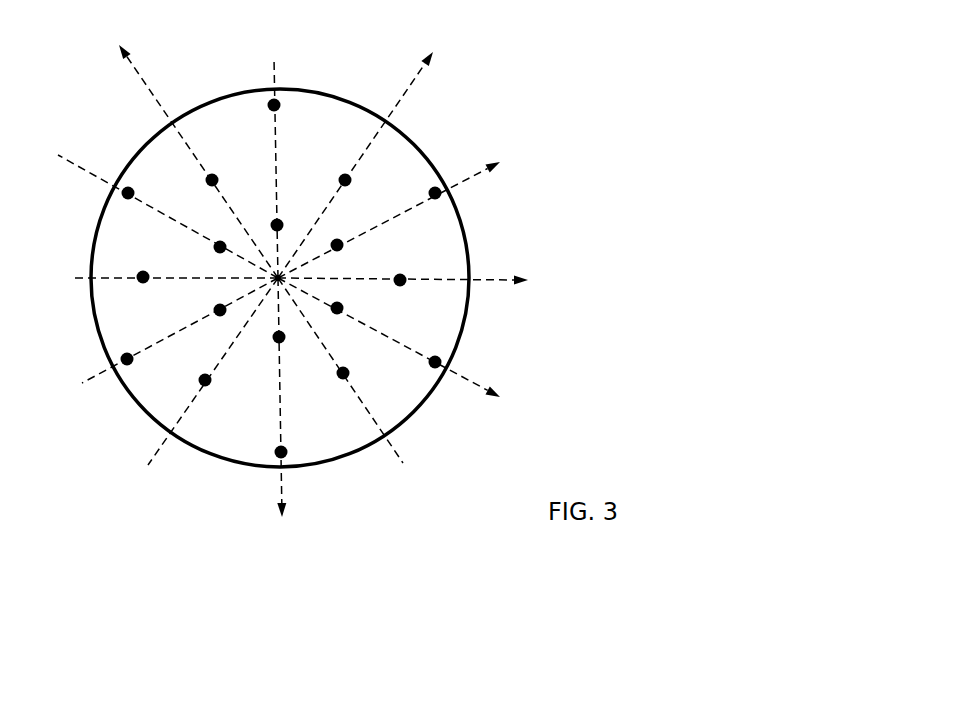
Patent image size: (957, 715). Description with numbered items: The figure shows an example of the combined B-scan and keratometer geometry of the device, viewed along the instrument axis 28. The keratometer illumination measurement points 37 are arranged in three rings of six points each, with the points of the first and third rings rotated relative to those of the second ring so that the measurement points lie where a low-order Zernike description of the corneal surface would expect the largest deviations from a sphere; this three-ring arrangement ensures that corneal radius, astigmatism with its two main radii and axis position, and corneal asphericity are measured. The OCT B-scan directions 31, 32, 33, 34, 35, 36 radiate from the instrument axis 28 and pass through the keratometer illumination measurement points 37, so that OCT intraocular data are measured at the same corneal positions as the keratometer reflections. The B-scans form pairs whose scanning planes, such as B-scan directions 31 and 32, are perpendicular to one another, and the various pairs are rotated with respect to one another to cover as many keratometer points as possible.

The instrument axis 28 is at (283, 272).
The B-scan direction 31 is at (150, 280).
The B-scan direction 32 is at (278, 150).
The B-scan direction 33 is at (195, 394).
The B-scan direction 34 is at (150, 211).
The B-scan direction 35 is at (356, 387).
The B-scan direction 36 is at (155, 343).
The keratometer illumination measurement points 37 is at (337, 308).